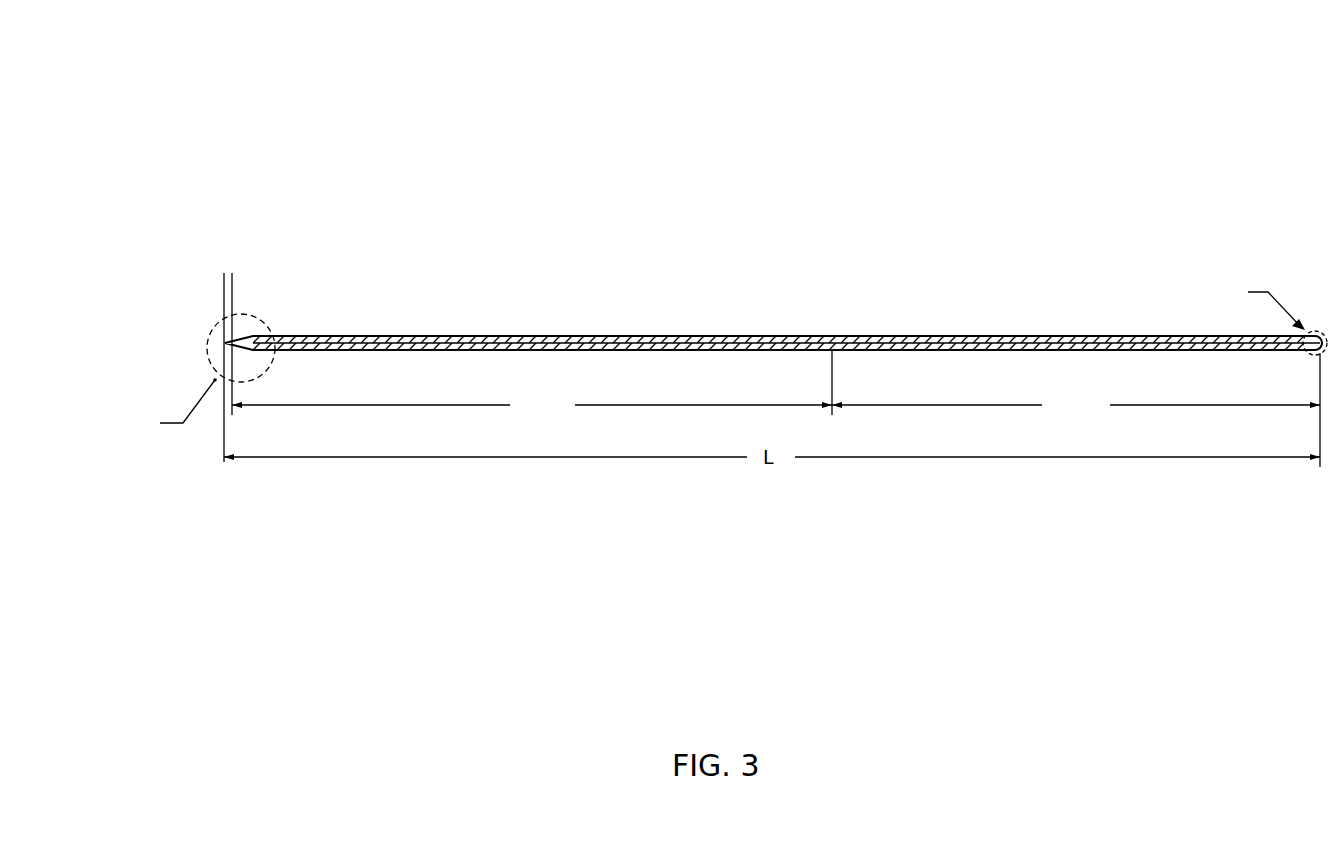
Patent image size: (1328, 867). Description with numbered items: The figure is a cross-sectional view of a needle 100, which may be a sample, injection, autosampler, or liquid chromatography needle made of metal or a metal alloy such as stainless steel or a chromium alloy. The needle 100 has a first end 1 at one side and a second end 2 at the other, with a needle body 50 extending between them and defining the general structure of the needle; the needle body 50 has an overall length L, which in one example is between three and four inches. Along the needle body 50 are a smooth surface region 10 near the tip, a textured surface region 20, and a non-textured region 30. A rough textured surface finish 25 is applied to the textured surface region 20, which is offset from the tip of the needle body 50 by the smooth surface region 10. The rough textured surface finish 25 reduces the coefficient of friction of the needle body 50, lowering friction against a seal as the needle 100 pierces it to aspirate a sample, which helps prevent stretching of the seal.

The needle 100 is at (955, 125).
The first end 1 is at (174, 250).
The second end 2 is at (1298, 262).
The smooth surface region 10 is at (258, 285).
The textured surface region 20 is at (532, 405).
The rough textured surface finish 25 is at (465, 337).
The non-textured region 30 is at (1076, 410).
The needle body 50 is at (817, 335).